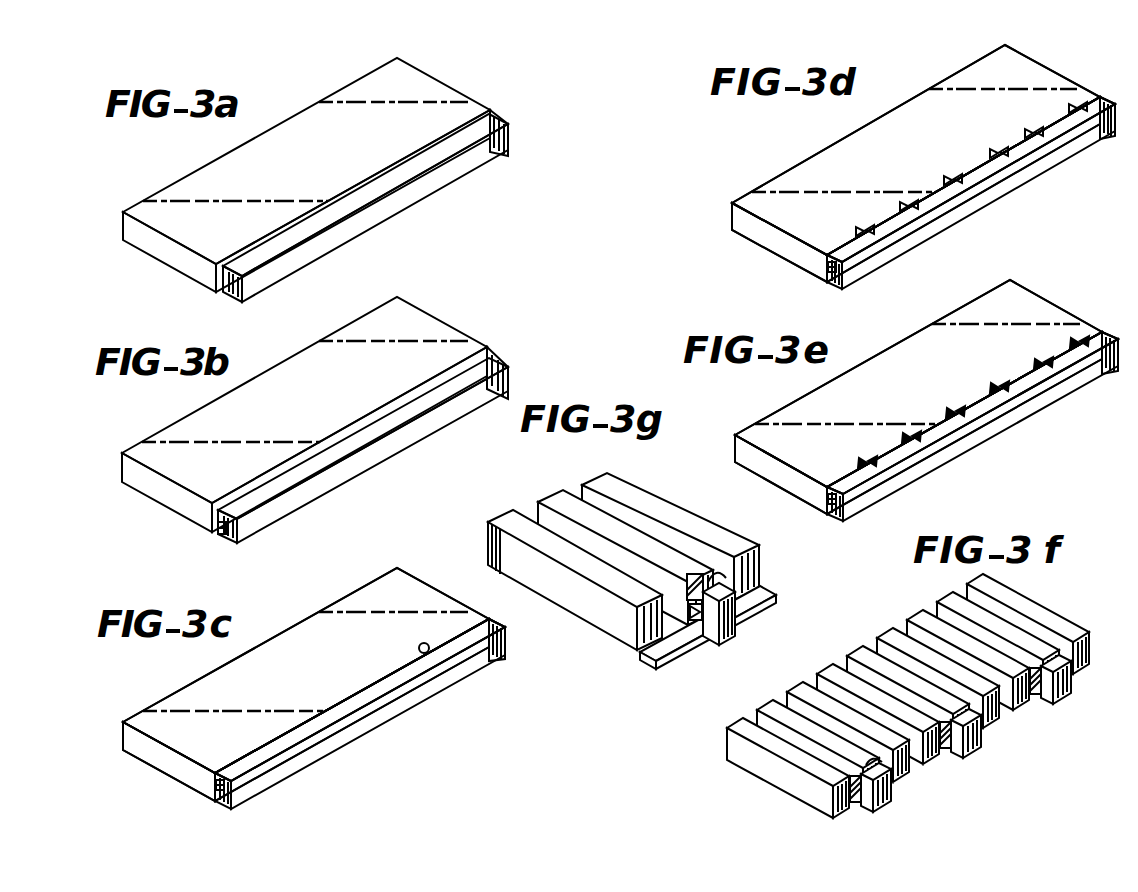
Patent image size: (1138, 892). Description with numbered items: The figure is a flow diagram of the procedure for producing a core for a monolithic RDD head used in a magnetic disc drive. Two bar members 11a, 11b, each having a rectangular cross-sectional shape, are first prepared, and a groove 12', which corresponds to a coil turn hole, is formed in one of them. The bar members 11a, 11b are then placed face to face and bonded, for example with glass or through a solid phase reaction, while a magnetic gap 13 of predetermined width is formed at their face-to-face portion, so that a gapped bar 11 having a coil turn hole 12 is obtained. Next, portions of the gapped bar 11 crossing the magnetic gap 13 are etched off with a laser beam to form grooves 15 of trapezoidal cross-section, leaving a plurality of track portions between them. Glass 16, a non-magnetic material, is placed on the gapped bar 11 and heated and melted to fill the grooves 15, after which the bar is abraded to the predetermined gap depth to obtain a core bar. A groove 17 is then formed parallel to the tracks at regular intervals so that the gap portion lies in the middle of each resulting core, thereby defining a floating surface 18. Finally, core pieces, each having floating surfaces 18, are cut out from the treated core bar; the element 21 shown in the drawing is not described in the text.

In FIG. 3C, the gapped bar 11 is at (387, 720).
In FIG. 3D, the gapped bar 11 is at (805, 158).
In FIG. 3E, the gapped bar 11 is at (1073, 310).
In FIG. 3A, the bar member 11a is at (150, 250).
In FIG. 3B, the bar member 11a is at (150, 487).
In FIG. 3C, the bar member 11a is at (158, 757).
In FIG. 3D, the bar member 11a is at (758, 235).
In FIG. 3E, the bar member 11a is at (787, 480).
In FIG. 3A, the bar member 11b is at (365, 215).
In FIG. 3B, the bar member 11b is at (332, 477).
In FIG. 3C, the bar member 11b is at (300, 762).
In FIG. 3D, the bar member 11b is at (957, 213).
In FIG. 3E, the bar member 11b is at (980, 432).
In FIG. 3C, the coil turn hole 12 is at (196, 806).
In FIG. 3D, the coil turn hole 12 is at (802, 285).
In FIG. 3E, the coil turn hole 12 is at (813, 516).
In FIG. 3G, the coil turn hole 12 is at (705, 621).
In FIG. 3F, the coil turn hole 12 is at (960, 733).
In FIG. 3B, the groove 12' is at (198, 545).
In FIG. 3C, the magnetic gap 13 is at (428, 650).
In FIG. 3D, the magnetic gap 13 is at (1020, 140).
In FIG. 3E, the magnetic gap 13 is at (1023, 377).
In FIG. 3D, the grooves 15 is at (887, 240).
In FIG. 3E, the glass 16 is at (880, 472).
In FIG. 3G, the glass 16 is at (727, 577).
In FIG. 3F, the glass 16 is at (885, 763).
In FIG. 3G, the groove 17 is at (582, 492).
In FIG. 3F, the groove 17 is at (800, 743).
In FIG. 3G, the floating surface 18 is at (640, 488).
In FIG. 3G, the base plate 21 is at (658, 643).